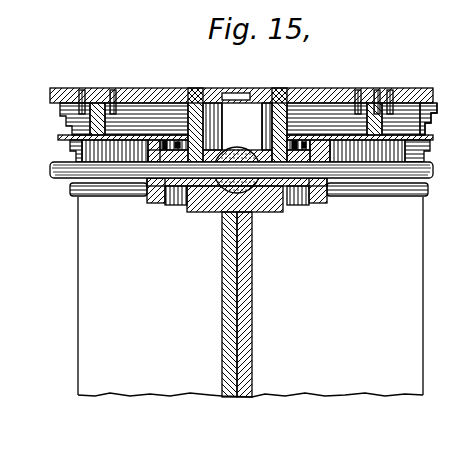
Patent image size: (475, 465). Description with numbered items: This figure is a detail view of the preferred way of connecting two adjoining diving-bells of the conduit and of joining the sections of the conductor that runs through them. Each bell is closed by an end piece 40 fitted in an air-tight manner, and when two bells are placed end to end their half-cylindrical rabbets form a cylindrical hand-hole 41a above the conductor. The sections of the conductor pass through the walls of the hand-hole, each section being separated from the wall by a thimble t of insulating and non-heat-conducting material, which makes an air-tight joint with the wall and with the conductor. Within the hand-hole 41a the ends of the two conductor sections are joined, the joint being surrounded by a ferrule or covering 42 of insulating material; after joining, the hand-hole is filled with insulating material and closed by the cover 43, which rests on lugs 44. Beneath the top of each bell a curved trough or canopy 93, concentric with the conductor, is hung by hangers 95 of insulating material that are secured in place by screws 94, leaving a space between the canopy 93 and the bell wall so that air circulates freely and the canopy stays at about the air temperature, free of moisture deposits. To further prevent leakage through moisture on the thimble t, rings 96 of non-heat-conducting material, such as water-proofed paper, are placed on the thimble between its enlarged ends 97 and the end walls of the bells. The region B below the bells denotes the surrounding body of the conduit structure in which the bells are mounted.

The end piece 40 is at (252, 296).
The cylindrical hand-hole 41a is at (239, 157).
The ferrule or covering 42 is at (213, 212).
The cover 43 is at (218, 88).
The lug 44 is at (277, 95).
The curved trough or canopy 93 is at (424, 143).
The screw 94 is at (114, 90).
The hanger 95 is at (84, 90).
The ring of non-heat-conducting material 96 is at (178, 205).
The enlarged end 97 is at (157, 203).
The thimble t is at (231, 238).
The frame B is at (250, 297).